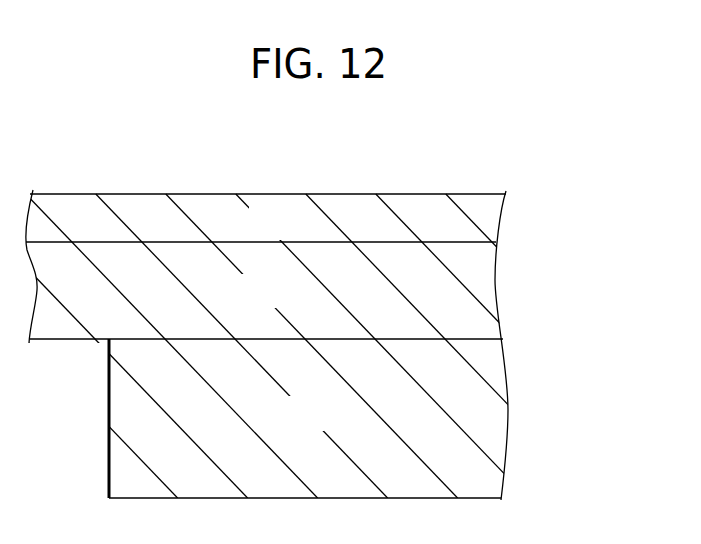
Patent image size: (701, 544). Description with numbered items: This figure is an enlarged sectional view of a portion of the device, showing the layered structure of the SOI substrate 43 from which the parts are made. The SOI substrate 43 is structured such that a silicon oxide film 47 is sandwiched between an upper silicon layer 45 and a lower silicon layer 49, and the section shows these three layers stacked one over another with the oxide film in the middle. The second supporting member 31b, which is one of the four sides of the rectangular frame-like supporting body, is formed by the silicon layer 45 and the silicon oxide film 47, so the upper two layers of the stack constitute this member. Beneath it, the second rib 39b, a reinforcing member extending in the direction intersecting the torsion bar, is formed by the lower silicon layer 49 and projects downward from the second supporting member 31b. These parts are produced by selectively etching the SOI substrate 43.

The second supporting member 31b is at (163, 287).
The second rib 39b is at (103, 342).
The SOI substrate 43 is at (588, 232).
The silicon layer 45 is at (480, 220).
The silicon oxide film 47 is at (475, 307).
The silicon layer 49 is at (487, 418).